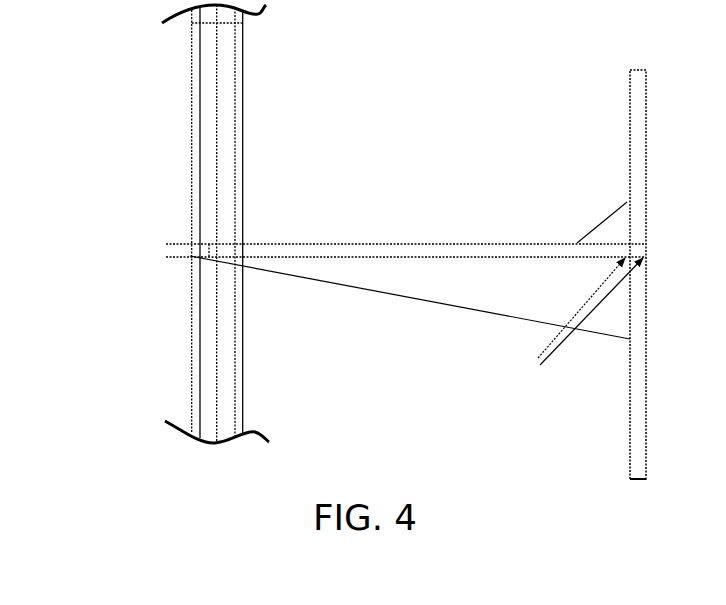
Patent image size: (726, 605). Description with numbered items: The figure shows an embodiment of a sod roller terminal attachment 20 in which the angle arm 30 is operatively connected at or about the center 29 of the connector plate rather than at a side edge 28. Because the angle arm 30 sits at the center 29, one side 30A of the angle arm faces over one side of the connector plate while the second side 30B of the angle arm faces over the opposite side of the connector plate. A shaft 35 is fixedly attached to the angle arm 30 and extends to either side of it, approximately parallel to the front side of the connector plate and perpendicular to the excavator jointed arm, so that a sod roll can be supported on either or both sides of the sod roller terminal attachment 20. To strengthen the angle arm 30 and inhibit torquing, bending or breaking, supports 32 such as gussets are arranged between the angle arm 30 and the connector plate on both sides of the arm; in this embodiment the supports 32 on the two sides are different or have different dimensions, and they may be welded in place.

The sod roller terminal attachment 20 is at (120, 291).
The side edge 28 is at (630, 70).
The center 29 is at (635, 250).
The angle arm 30 is at (406, 259).
The one side of the angle arm 30A is at (490, 242).
The second side of the angle arm 30B is at (418, 250).
The support 32 is at (610, 223).
The shaft 35 is at (243, 136).